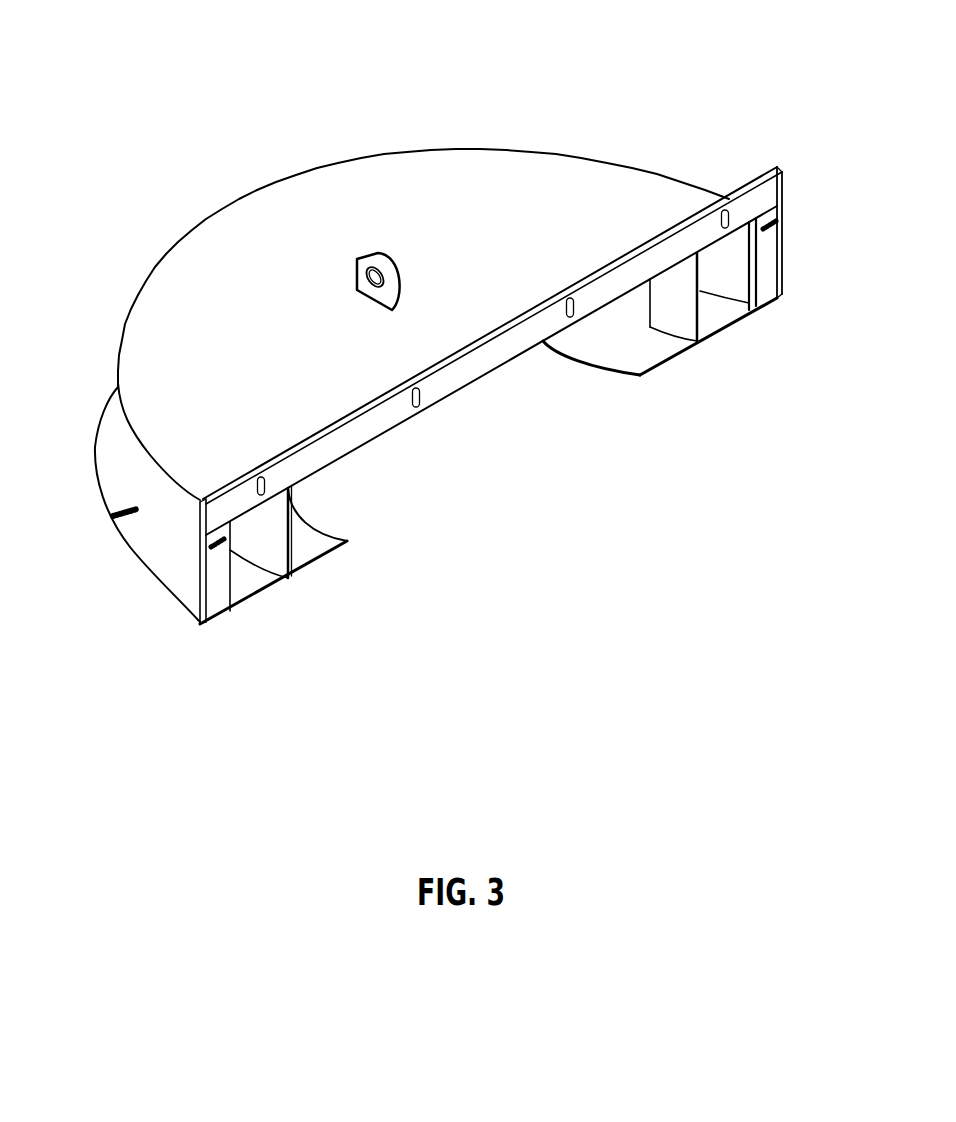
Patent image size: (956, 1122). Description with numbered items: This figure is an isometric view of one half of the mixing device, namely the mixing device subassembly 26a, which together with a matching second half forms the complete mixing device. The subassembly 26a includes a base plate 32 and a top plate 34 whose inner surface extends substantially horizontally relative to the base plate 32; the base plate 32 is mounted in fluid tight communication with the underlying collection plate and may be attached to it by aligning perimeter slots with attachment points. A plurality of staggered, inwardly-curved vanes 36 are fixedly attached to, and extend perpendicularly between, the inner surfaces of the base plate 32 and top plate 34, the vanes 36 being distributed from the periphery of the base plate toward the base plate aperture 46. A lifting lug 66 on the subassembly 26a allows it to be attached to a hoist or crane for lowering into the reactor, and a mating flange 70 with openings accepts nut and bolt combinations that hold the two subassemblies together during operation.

The mixing device subassembly 26a is at (193, 98).
The top plate 34 is at (637, 183).
The lifting lug 66 is at (372, 255).
The base plate 32 is at (657, 352).
The mating flange 70 is at (772, 203).
The vanes 36 is at (273, 553).
The base plate aperture 46 is at (625, 363).